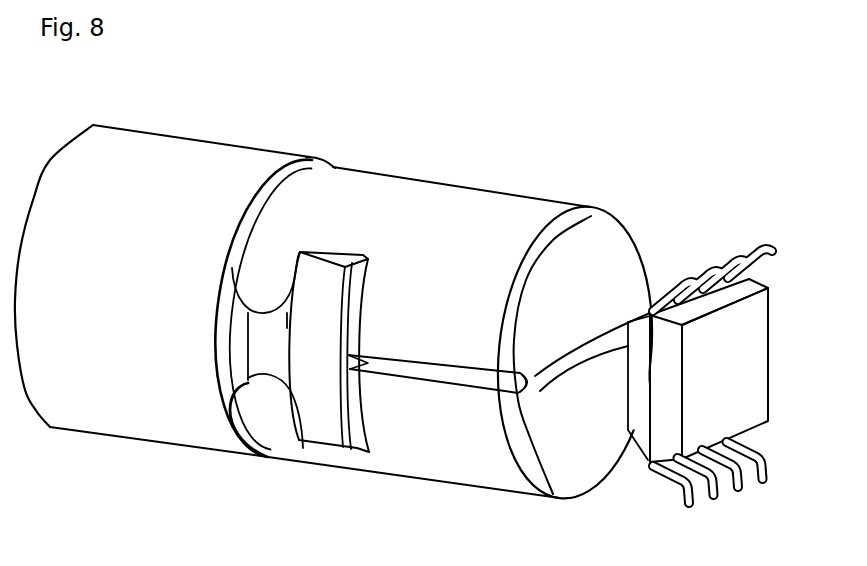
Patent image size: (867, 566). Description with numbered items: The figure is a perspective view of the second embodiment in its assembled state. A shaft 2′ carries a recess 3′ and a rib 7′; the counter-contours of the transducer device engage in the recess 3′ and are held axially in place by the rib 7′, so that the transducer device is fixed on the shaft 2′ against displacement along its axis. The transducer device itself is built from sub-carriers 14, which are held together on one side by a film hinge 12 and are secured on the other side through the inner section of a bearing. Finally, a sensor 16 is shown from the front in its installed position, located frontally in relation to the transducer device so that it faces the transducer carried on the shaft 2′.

The shaft 2′ is at (182, 157).
The recess 3′ is at (232, 340).
The rib 7′ is at (315, 383).
The film hinge 12 is at (552, 370).
The sub-carriers 14 is at (437, 215).
The sensor 16 is at (738, 352).